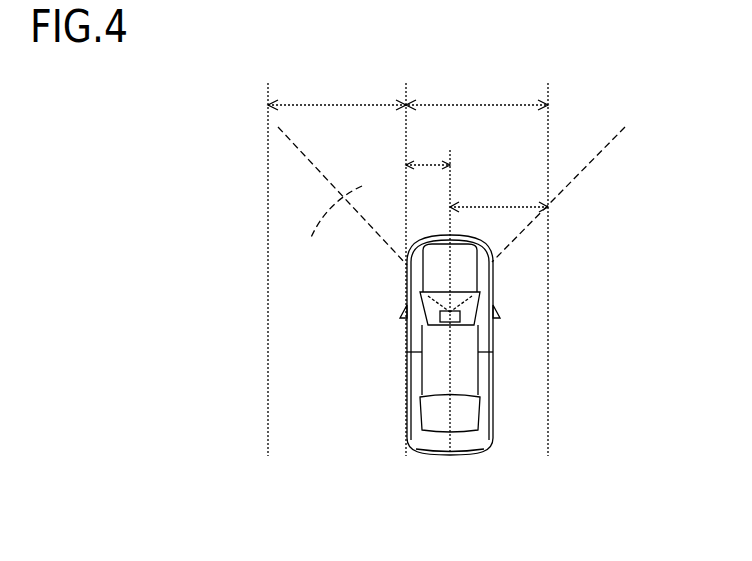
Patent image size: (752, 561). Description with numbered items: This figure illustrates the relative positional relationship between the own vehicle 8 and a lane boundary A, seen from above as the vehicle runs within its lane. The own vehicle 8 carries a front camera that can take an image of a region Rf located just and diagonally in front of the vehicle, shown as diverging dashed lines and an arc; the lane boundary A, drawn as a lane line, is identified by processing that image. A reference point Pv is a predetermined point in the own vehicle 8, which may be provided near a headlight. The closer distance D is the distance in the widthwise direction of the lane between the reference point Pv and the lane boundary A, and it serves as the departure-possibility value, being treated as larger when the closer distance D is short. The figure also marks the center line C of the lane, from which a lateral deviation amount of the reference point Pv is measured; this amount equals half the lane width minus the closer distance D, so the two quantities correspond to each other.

The own vehicle 8 is at (380, 364).
The lane boundary A is at (548, 283).
The center line of the lane C is at (405, 256).
The reference point Pv is at (437, 301).
The region Rf is at (451, 200).
The closer distance D is at (499, 195).